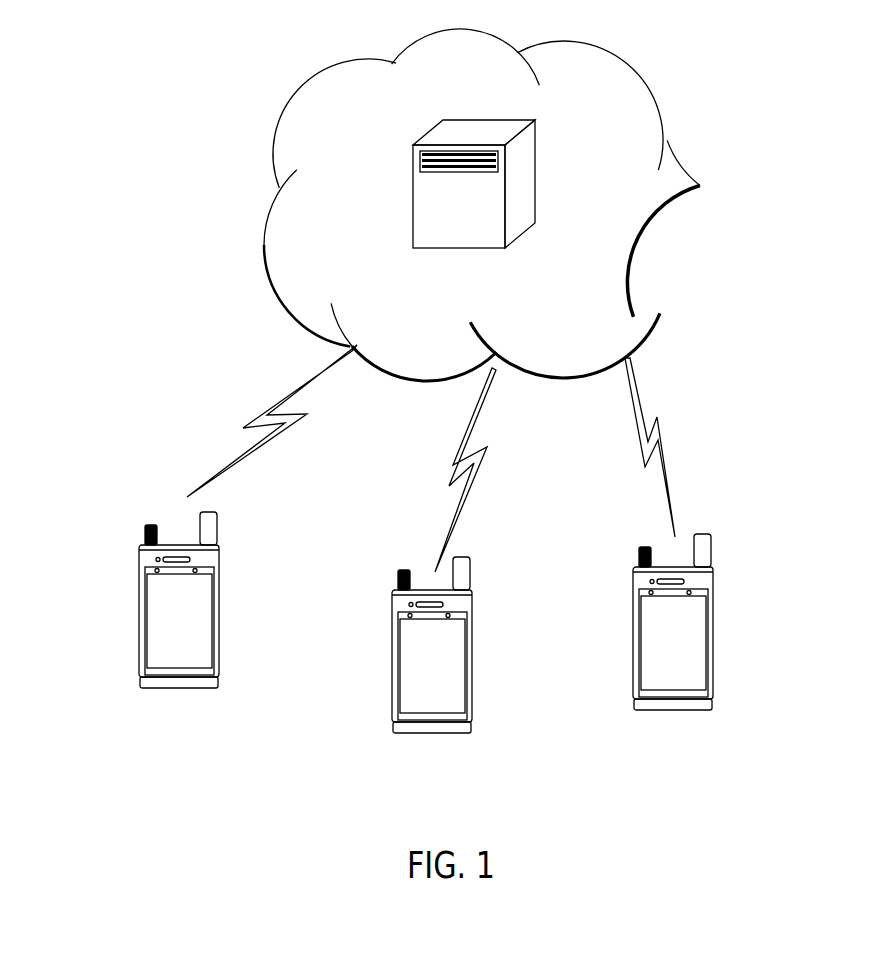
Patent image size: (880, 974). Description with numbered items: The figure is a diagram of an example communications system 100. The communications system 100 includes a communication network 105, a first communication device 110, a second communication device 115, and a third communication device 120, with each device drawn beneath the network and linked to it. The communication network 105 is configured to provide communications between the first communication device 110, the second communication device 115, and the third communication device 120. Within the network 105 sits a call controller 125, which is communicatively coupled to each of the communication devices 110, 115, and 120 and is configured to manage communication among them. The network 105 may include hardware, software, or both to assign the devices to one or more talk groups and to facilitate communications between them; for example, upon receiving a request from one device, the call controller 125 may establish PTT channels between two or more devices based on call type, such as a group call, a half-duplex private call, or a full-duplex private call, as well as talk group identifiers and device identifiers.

The communications system 100 is at (134, 354).
The communication network 105 is at (270, 191).
The first communication device 110 is at (139, 614).
The second communication device 115 is at (392, 662).
The third communication device 120 is at (633, 637).
The call controller 125 is at (413, 193).